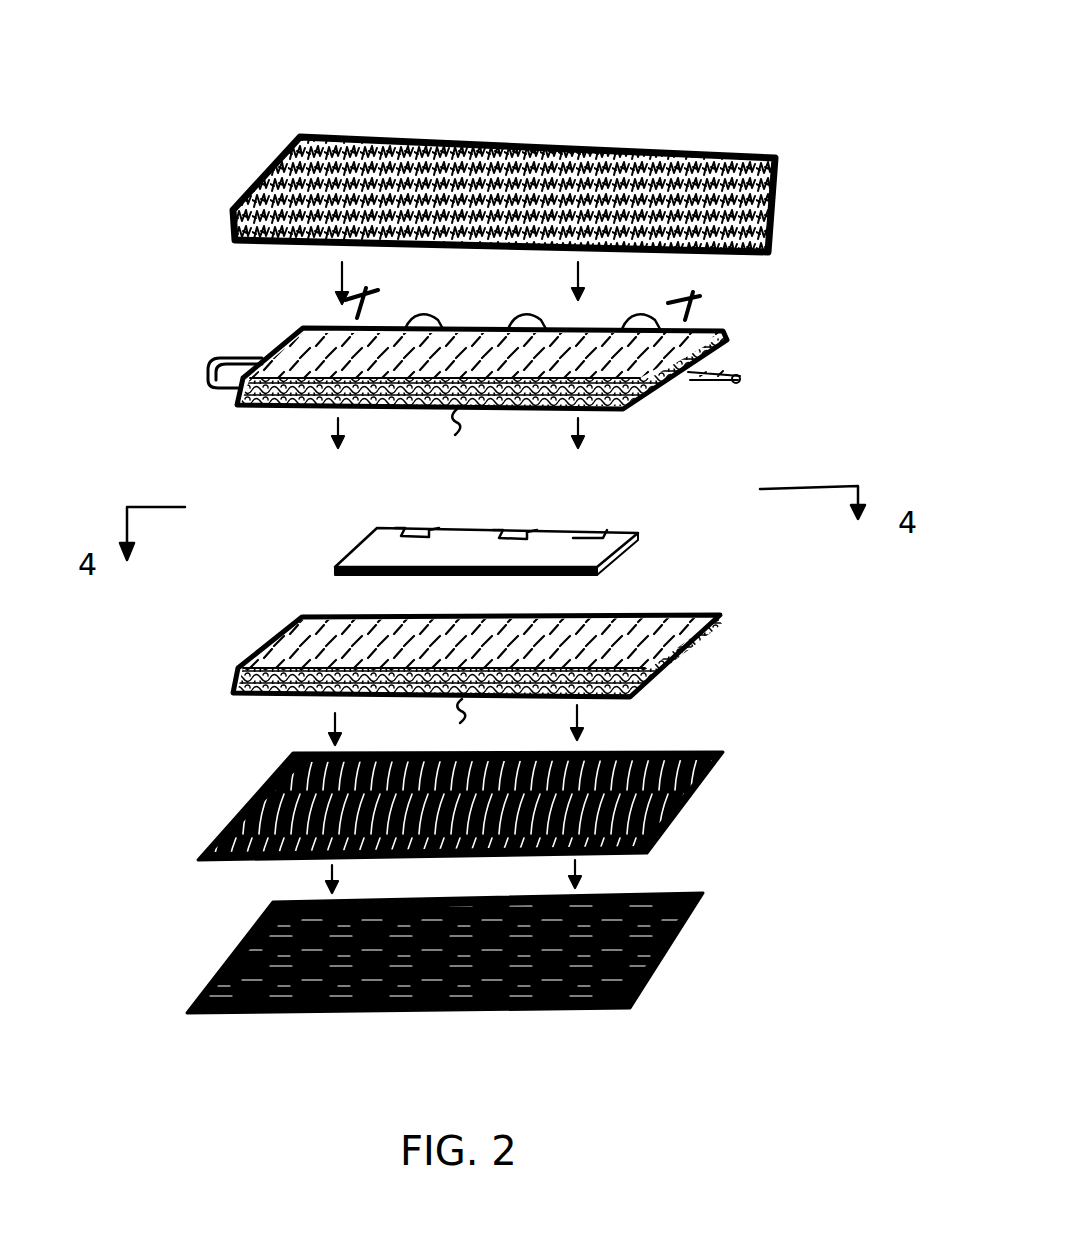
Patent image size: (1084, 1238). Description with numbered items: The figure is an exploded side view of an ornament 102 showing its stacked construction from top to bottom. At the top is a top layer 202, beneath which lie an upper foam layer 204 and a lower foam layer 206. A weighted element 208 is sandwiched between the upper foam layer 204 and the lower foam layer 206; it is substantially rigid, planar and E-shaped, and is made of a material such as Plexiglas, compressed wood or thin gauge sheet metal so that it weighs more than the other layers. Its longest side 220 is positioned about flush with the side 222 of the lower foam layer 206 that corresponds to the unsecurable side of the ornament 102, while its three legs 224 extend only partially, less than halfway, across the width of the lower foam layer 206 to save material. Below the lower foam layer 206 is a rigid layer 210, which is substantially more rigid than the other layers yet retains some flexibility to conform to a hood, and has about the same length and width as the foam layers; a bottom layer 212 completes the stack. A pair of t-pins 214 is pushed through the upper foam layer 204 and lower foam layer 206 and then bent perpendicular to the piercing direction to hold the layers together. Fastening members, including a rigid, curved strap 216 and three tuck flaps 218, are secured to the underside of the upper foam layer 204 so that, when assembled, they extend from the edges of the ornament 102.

The ornament 102 is at (735, 62).
The top layer 202 is at (785, 232).
The upper foam layer 204 is at (745, 360).
The lower foam layer 206 is at (727, 660).
The weighted element 208 is at (658, 555).
The rigid layer 210 is at (710, 807).
The bottom layer 212 is at (688, 955).
The t-pins 214 is at (340, 304).
The rigid, curved strap 216 is at (200, 386).
The tuck flaps 218 is at (625, 314).
The longest side 220 is at (375, 577).
The side of the lower foam layer 222 is at (444, 442).
The legs 224 is at (612, 525).